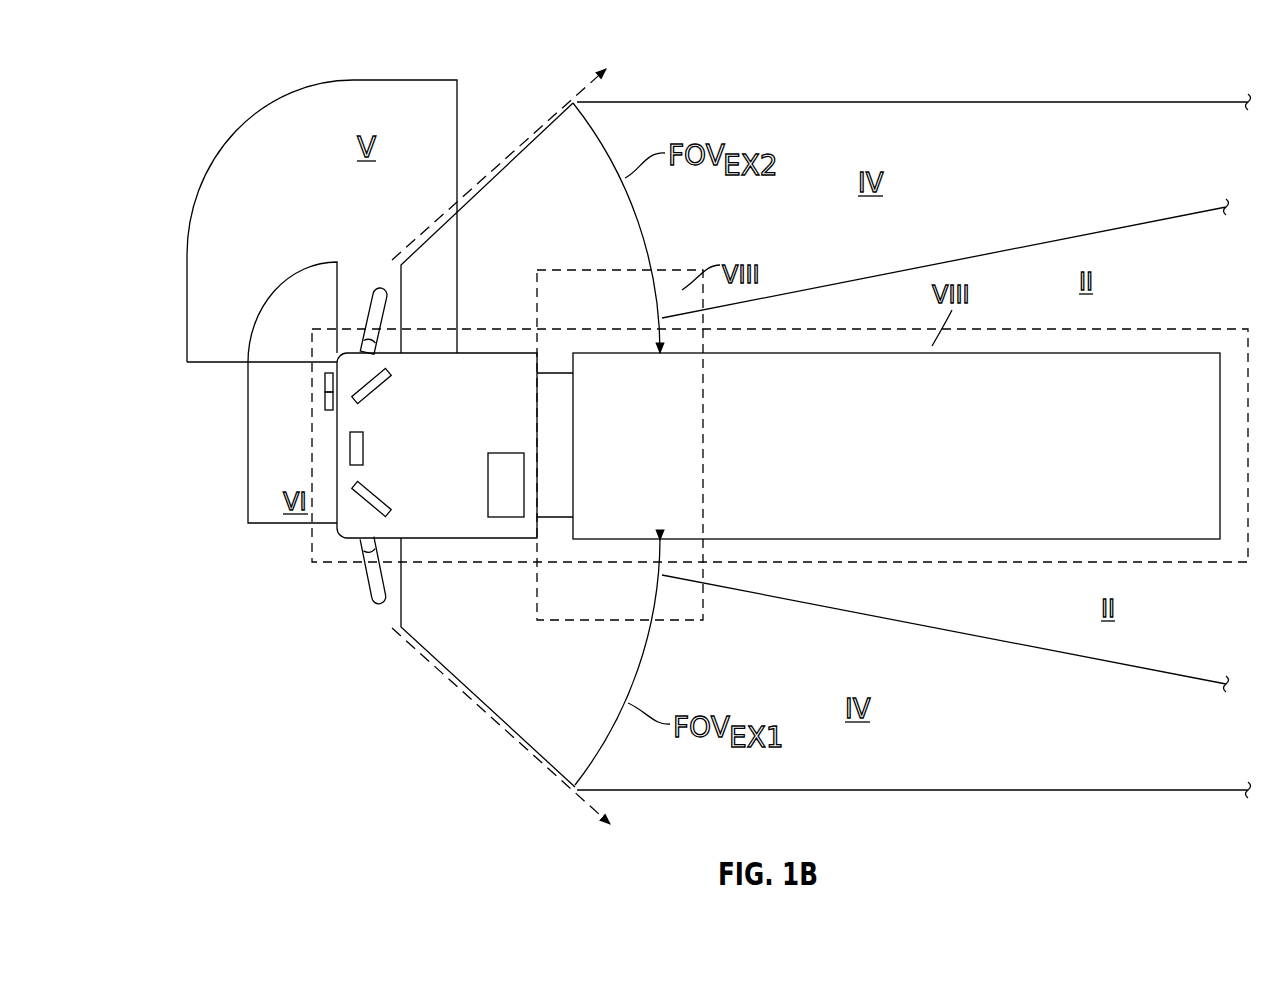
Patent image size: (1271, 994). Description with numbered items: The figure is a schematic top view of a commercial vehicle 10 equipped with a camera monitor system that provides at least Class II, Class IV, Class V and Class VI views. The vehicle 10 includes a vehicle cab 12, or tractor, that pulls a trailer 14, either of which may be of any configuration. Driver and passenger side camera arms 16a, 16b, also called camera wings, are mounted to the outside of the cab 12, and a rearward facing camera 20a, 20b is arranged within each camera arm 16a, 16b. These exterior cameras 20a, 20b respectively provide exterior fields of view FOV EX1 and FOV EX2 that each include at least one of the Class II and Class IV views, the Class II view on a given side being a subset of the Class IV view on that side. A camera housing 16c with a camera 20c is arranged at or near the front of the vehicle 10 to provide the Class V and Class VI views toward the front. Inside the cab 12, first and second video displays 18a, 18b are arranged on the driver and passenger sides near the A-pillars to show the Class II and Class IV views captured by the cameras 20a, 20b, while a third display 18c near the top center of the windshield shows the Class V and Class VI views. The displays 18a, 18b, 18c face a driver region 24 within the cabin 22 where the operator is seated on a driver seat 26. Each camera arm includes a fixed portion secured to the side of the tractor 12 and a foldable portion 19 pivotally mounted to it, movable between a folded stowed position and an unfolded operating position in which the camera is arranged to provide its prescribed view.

The commercial vehicle 10 is at (323, 347).
The vehicle cab 12 is at (336, 533).
The trailer 14 is at (1134, 351).
The driver side camera arm 16a is at (373, 581).
The passenger side camera arm 16b is at (372, 309).
The camera housing 16c is at (326, 398).
The first video display 18a is at (376, 494).
The second video display 18b is at (379, 389).
The third display 18c is at (350, 443).
The foldable portion 19 is at (382, 603).
The rearward facing camera 20a is at (384, 592).
The rearward facing camera 20b is at (386, 300).
The camera 20c is at (326, 381).
The cabin 22 is at (479, 378).
The driver region 24 is at (483, 477).
The driver seat 26 is at (505, 465).